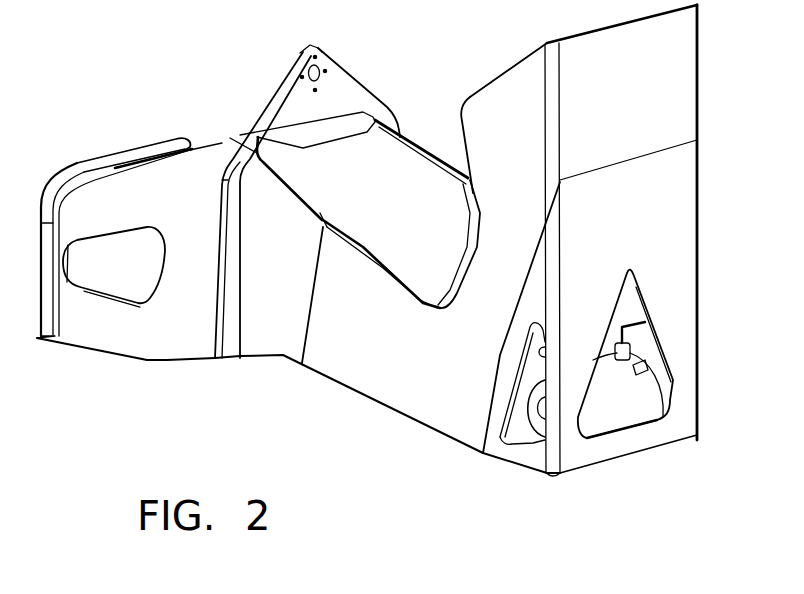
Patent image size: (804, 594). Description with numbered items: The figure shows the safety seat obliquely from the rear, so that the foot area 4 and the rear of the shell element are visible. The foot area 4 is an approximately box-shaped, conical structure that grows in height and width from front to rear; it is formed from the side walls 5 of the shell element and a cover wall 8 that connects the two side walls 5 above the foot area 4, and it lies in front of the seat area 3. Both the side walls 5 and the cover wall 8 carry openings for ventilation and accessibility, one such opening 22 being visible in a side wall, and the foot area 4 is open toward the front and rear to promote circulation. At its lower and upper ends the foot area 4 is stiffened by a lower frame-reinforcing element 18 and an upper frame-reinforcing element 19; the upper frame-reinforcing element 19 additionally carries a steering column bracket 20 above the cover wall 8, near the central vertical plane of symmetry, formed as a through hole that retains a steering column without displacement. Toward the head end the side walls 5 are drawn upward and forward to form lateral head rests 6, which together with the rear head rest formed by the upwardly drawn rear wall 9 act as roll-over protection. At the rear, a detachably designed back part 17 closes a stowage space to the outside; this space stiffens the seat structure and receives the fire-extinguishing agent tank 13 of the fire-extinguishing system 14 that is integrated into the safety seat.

The seat area 3 is at (390, 243).
The foot area 4 is at (174, 337).
The side walls 5 is at (410, 137).
The lateral head rests 6 is at (473, 93).
The cover wall 8 is at (214, 138).
The rear wall 9 is at (705, 60).
The fire-extinguishing agent tank 13 is at (637, 408).
The fire-extinguishing system 14 is at (654, 419).
The back part 17 is at (680, 272).
The lower frame-reinforcing element 18 is at (43, 337).
The upper frame-reinforcing element 19 is at (213, 358).
The steering column bracket 20 is at (320, 77).
The opening 22 is at (117, 263).